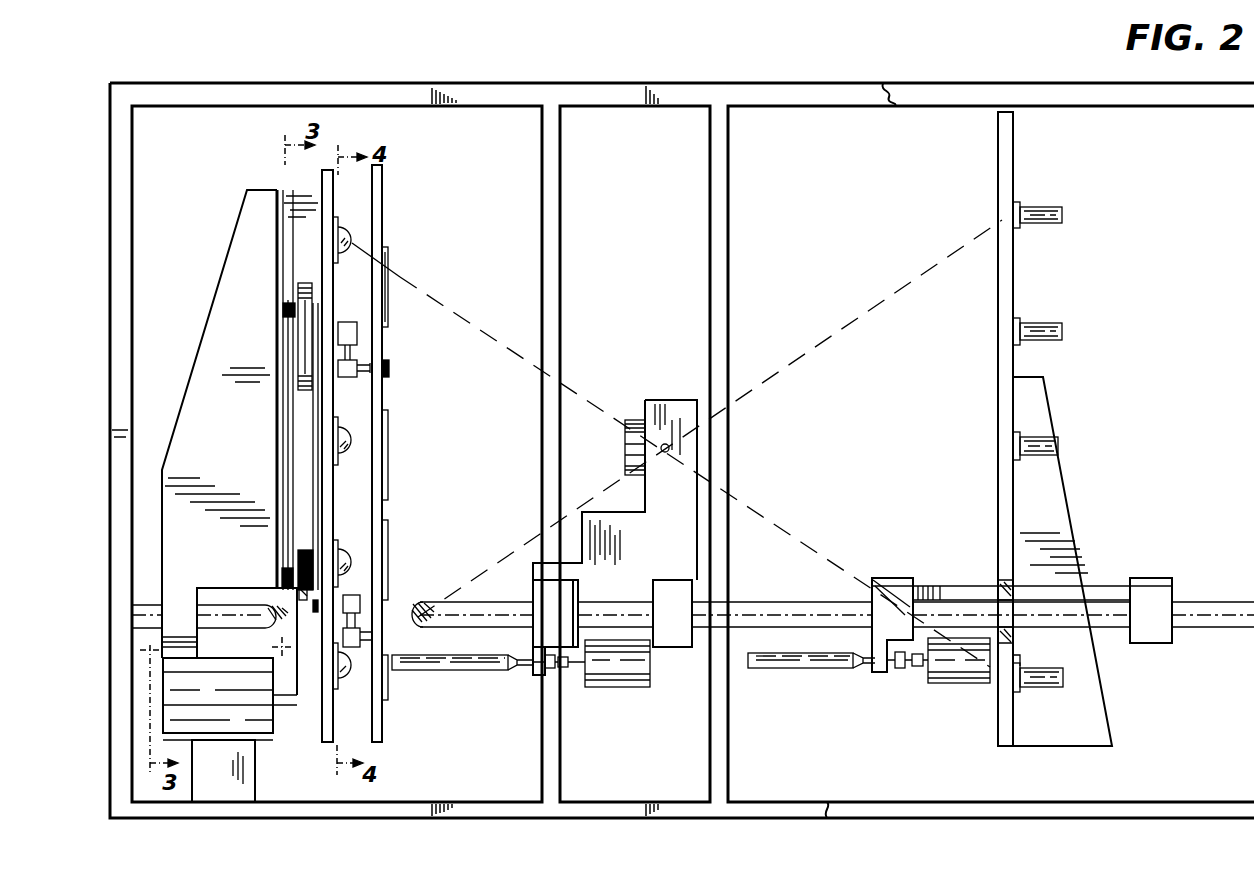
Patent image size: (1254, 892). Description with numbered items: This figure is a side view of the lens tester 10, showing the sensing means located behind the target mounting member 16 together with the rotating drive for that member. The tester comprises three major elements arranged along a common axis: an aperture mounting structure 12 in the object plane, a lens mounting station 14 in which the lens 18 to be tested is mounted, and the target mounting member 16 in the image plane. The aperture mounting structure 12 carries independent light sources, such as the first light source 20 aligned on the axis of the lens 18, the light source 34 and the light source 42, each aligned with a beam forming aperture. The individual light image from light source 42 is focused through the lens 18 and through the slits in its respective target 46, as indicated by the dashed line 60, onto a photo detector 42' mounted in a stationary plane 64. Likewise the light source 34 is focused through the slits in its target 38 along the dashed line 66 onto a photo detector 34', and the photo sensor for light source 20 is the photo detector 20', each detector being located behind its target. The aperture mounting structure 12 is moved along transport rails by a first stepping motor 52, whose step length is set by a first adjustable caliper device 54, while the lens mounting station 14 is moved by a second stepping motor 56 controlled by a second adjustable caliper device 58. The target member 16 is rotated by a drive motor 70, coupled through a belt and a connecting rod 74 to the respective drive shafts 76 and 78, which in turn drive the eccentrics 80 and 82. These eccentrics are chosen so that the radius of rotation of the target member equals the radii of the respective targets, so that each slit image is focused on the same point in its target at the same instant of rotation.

The lens tester 10 is at (653, 142).
The aperture mounting structure 12 is at (1015, 152).
The lens mounting station 14 is at (666, 444).
The target mounting member 16 is at (384, 178).
The lens 18 is at (630, 420).
The first light source 20 is at (1062, 561).
The photo detector 20' is at (349, 425).
The light source 34 is at (1046, 693).
The photo detector 34' is at (349, 225).
The target 38 is at (386, 252).
The light source 42 is at (1061, 206).
The photo detector 42' is at (354, 678).
The target 46 is at (388, 690).
The first stepping motor 52 is at (952, 678).
The first adjustable caliper device 54 is at (818, 668).
The second stepping motor 56 is at (616, 676).
The second adjustable caliper device 58 is at (478, 672).
The dashed line 60 is at (490, 564).
The stationary plane 64 is at (330, 172).
The dashed line 66 is at (480, 318).
The drive motor 70 is at (228, 709).
The connecting rod 74 is at (292, 440).
The drive shaft 76 is at (352, 585).
The drive shaft 78 is at (318, 333).
The eccentric 80 is at (364, 622).
The eccentric 82 is at (357, 330).